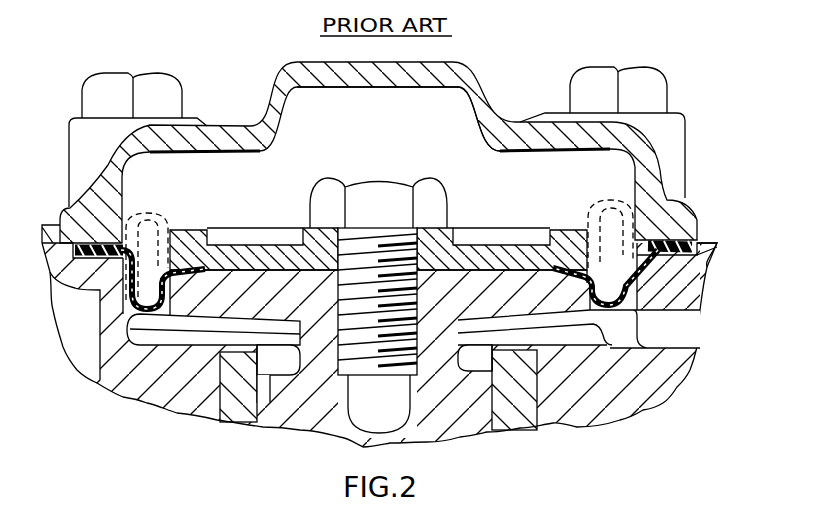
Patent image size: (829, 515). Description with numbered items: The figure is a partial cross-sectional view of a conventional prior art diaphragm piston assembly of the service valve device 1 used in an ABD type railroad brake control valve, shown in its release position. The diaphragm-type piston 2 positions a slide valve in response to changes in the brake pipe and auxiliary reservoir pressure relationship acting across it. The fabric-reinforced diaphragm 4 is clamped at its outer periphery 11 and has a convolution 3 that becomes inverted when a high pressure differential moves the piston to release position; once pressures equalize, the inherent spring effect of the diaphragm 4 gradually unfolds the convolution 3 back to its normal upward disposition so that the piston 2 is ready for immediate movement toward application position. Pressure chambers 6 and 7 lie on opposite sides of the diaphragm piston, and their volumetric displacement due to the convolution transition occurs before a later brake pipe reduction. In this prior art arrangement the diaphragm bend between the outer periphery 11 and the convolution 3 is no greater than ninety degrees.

The service valve device 1 is at (684, 117).
The diaphragm-type piston 2 is at (522, 297).
The convolution 3 is at (146, 210).
The diaphragm 4 is at (610, 277).
The pressure chamber 6 is at (240, 170).
The pressure chamber 7 is at (150, 335).
The outer periphery 11 is at (707, 257).